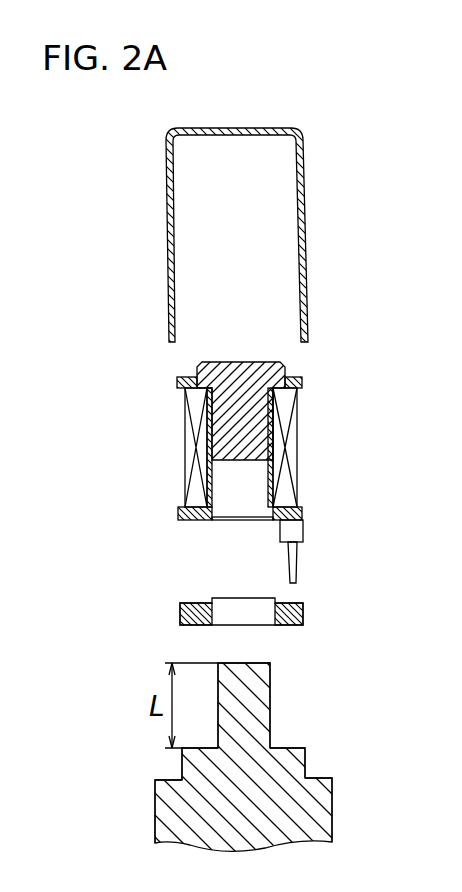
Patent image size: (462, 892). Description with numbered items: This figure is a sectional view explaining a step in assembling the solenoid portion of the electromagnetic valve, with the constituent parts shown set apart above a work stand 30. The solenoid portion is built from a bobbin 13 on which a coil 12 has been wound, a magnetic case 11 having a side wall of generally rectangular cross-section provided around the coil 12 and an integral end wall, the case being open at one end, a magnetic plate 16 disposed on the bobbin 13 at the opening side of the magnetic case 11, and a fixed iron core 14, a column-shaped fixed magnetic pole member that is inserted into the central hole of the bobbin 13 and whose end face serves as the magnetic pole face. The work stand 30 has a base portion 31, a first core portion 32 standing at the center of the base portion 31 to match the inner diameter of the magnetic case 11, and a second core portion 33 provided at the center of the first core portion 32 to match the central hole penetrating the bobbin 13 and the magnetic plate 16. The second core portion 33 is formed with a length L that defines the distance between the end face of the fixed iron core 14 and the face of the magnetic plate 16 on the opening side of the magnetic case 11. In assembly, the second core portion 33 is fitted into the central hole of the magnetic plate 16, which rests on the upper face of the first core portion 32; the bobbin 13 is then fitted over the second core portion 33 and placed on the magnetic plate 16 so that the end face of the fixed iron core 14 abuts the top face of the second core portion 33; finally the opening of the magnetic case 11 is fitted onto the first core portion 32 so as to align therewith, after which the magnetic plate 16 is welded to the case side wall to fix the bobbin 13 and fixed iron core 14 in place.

The magnetic case 11 is at (304, 194).
The coil 12 is at (292, 462).
The bobbin 13 is at (288, 382).
The fixed iron core 14 is at (248, 407).
The magnetic plate 16 is at (305, 612).
The work stand 30 is at (231, 757).
The base portion 31 is at (316, 812).
The first core portion 32 is at (305, 764).
The second core portion 33 is at (262, 708).